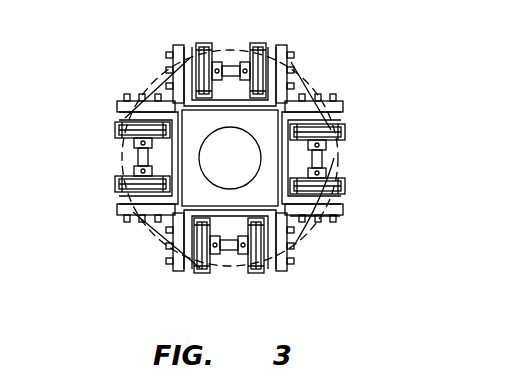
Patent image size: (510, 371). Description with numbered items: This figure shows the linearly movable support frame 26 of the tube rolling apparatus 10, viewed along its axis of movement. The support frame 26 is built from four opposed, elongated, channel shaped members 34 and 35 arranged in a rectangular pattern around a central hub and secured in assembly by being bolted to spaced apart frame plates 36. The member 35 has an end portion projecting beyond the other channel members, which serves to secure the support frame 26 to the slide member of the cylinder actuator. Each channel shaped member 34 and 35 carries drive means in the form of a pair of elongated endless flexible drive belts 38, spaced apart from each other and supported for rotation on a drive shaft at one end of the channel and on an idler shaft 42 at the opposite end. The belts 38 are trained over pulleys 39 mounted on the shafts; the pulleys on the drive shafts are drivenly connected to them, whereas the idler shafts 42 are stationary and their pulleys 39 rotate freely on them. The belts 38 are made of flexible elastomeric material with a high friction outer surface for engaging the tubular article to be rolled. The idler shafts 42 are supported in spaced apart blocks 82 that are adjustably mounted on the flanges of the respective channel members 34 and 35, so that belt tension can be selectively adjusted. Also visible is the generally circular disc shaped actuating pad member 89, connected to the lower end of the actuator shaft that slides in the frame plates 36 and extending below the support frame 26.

The apparatus 10 is at (352, 77).
The support frame 26 is at (116, 200).
The channel shaped member 34 is at (280, 47).
The channel shaped member 35 is at (340, 210).
The frame plate 36 is at (272, 170).
The drive belt 38 is at (258, 43).
The pulley 39 is at (128, 99).
The idler shaft 42 is at (238, 78).
The block 82 is at (178, 45).
The actuating pad member 89 is at (148, 64).